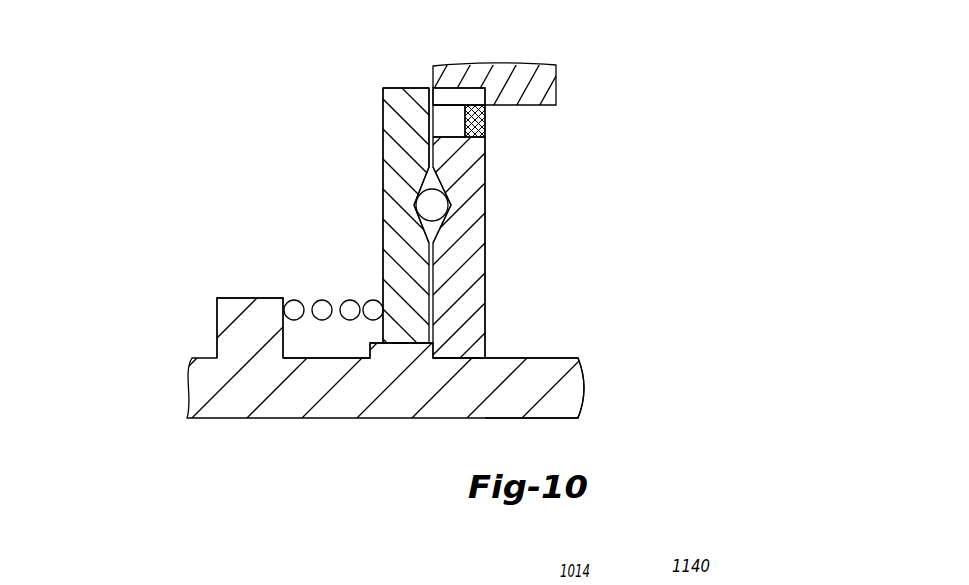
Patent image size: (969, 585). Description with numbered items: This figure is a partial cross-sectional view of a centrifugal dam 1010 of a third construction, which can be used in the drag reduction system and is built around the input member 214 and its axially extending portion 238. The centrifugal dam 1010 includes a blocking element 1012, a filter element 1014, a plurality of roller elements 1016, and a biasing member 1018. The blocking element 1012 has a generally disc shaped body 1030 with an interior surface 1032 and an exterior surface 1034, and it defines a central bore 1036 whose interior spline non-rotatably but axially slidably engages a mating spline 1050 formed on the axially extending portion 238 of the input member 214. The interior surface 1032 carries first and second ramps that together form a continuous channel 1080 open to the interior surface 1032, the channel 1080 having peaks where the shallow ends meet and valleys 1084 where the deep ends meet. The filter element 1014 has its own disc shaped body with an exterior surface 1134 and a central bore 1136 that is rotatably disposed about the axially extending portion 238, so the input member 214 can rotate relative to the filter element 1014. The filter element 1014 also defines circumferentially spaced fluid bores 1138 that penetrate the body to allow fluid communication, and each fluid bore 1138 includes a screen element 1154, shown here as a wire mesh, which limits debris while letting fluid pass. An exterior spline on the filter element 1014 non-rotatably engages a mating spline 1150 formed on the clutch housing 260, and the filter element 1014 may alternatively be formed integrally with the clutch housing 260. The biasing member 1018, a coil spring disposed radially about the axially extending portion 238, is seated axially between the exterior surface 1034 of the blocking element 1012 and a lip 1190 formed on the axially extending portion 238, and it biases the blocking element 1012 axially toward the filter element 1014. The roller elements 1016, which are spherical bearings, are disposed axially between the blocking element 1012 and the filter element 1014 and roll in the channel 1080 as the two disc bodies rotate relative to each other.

The centrifugal dam 1010 is at (151, 71).
The blocking element 1012 is at (392, 260).
The filter element 1014 is at (473, 252).
The roller elements 1016 is at (465, 202).
The biasing member 1018 is at (293, 300).
The disc shaped body 1030 is at (393, 106).
The interior surface 1032 is at (427, 98).
The exterior surface 1034 is at (383, 138).
The central bore 1036 is at (393, 343).
The mating spline 1050 is at (368, 352).
The channel 1080 is at (418, 224).
The valleys 1084 is at (414, 205).
The exterior surface 1134 is at (485, 307).
The central bore 1136 is at (447, 362).
The fluid bores 1138 is at (458, 102).
The mating spline 1150 is at (455, 115).
The screen element 1154 is at (485, 120).
The lip 1190 is at (215, 310).
The input member 214 is at (213, 387).
The axially extending portion 238 is at (570, 388).
The clutch housing 260 is at (550, 85).